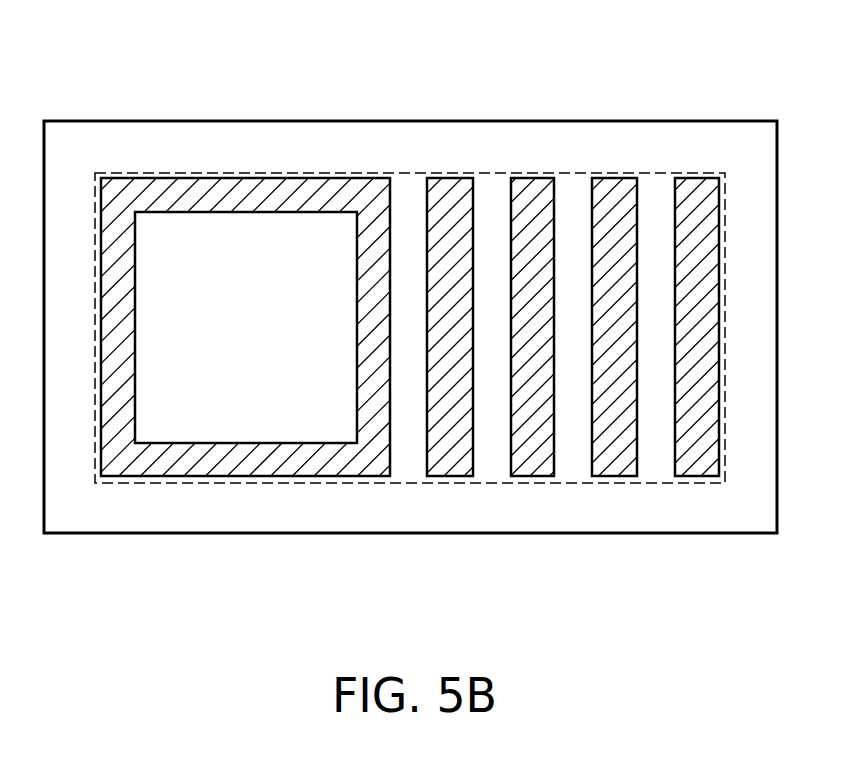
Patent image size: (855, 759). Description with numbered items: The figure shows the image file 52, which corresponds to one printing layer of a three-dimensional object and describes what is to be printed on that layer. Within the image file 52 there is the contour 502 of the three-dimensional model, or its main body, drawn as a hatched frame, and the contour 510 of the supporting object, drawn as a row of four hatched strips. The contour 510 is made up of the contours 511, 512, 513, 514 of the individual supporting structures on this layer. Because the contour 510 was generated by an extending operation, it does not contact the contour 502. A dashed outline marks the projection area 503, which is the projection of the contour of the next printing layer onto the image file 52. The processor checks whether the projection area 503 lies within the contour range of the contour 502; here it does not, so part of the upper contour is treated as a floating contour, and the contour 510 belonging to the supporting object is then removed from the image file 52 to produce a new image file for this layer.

The image file 52 is at (713, 120).
The contour 502 is at (255, 178).
The projection area 503 is at (492, 170).
The contour 510 is at (575, 413).
The contour 511 is at (451, 459).
The contour 512 is at (533, 459).
The contour 513 is at (615, 459).
The contour 514 is at (698, 389).